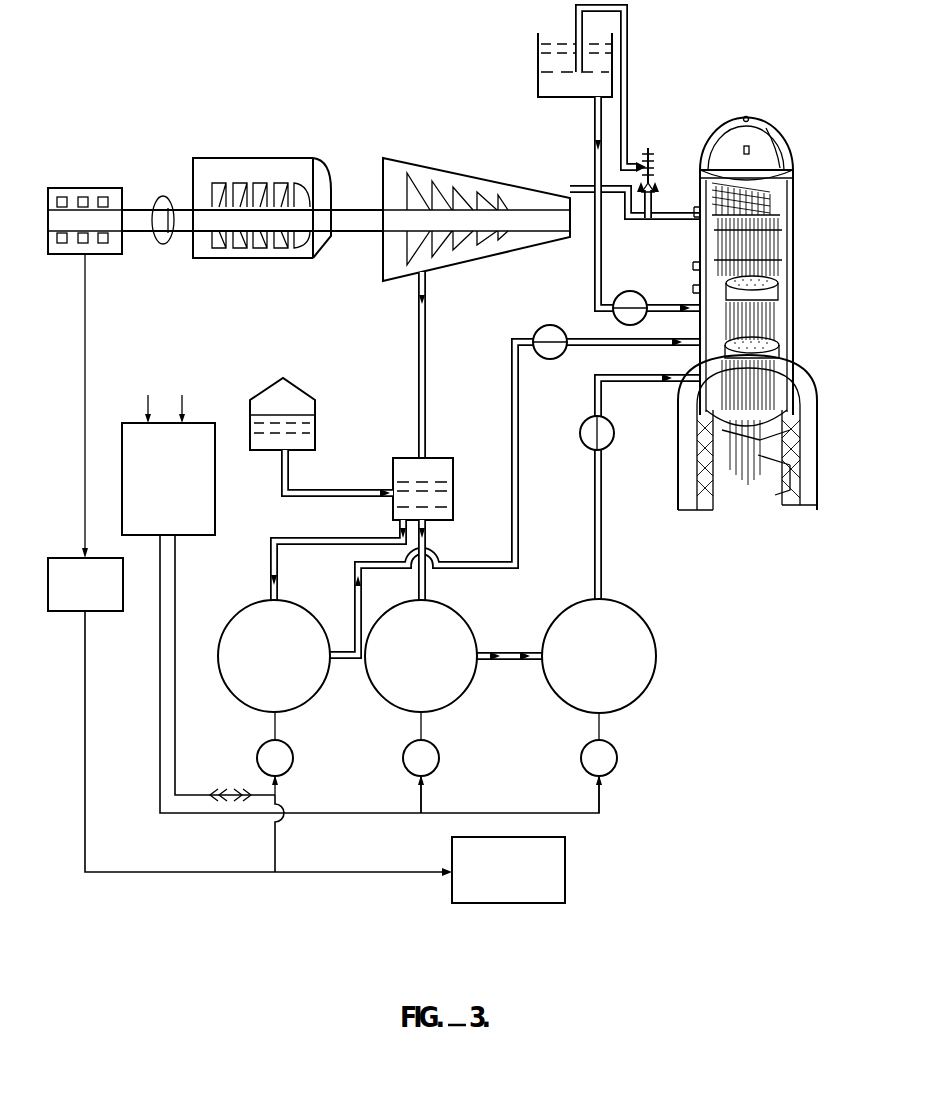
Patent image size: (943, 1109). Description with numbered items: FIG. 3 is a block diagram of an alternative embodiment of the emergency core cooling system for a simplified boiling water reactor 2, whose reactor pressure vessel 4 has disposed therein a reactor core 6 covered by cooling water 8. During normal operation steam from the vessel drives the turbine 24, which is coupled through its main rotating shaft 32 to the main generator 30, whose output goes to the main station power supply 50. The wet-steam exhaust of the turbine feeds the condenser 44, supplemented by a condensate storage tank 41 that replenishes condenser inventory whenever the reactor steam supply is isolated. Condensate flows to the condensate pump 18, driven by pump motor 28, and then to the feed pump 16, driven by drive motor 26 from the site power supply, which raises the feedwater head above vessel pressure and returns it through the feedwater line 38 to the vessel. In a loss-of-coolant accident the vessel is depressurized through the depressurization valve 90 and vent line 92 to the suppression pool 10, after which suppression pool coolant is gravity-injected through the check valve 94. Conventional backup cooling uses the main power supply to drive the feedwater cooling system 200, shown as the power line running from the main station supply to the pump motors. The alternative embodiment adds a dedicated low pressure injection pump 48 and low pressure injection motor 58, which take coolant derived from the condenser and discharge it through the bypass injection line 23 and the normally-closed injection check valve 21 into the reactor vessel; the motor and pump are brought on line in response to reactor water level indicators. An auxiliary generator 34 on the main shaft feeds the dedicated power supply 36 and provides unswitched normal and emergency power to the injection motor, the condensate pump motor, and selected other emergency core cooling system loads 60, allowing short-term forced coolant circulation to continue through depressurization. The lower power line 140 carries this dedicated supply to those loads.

The boiling water reactor 2 is at (749, 302).
The reactor pressure vessel 4 is at (791, 236).
The reactor core 6 is at (763, 333).
The cooling water 8 is at (773, 273).
The suppression pool 10 is at (538, 47).
The feed pump 16 is at (630, 611).
The condensate pump 18 is at (449, 611).
The injection check valve 21 is at (548, 327).
The injection line 23 is at (520, 442).
The turbine 24 is at (486, 185).
The drive motor 26 is at (617, 761).
The pump motor 28 is at (439, 761).
The main generator 30 is at (284, 158).
The main rotating shaft 32 is at (126, 210).
The auxiliary generator 34 is at (90, 188).
The power supply 36 is at (124, 579).
The feedwater line 38 is at (640, 487).
The condensate storage tank 41 is at (315, 407).
The condenser 44 is at (436, 457).
The low pressure injection pump 48 is at (303, 611).
The main station power supply 50 is at (204, 408).
The low pressure injection motor 58 is at (293, 761).
The emergency core cooling system loads 60 is at (568, 855).
The depressurization valve 90 is at (652, 183).
The vent line 92 is at (629, 58).
The check valve 94 is at (642, 298).
The power line 140 is at (238, 874).
The feedwater cooling system 200 is at (250, 814).